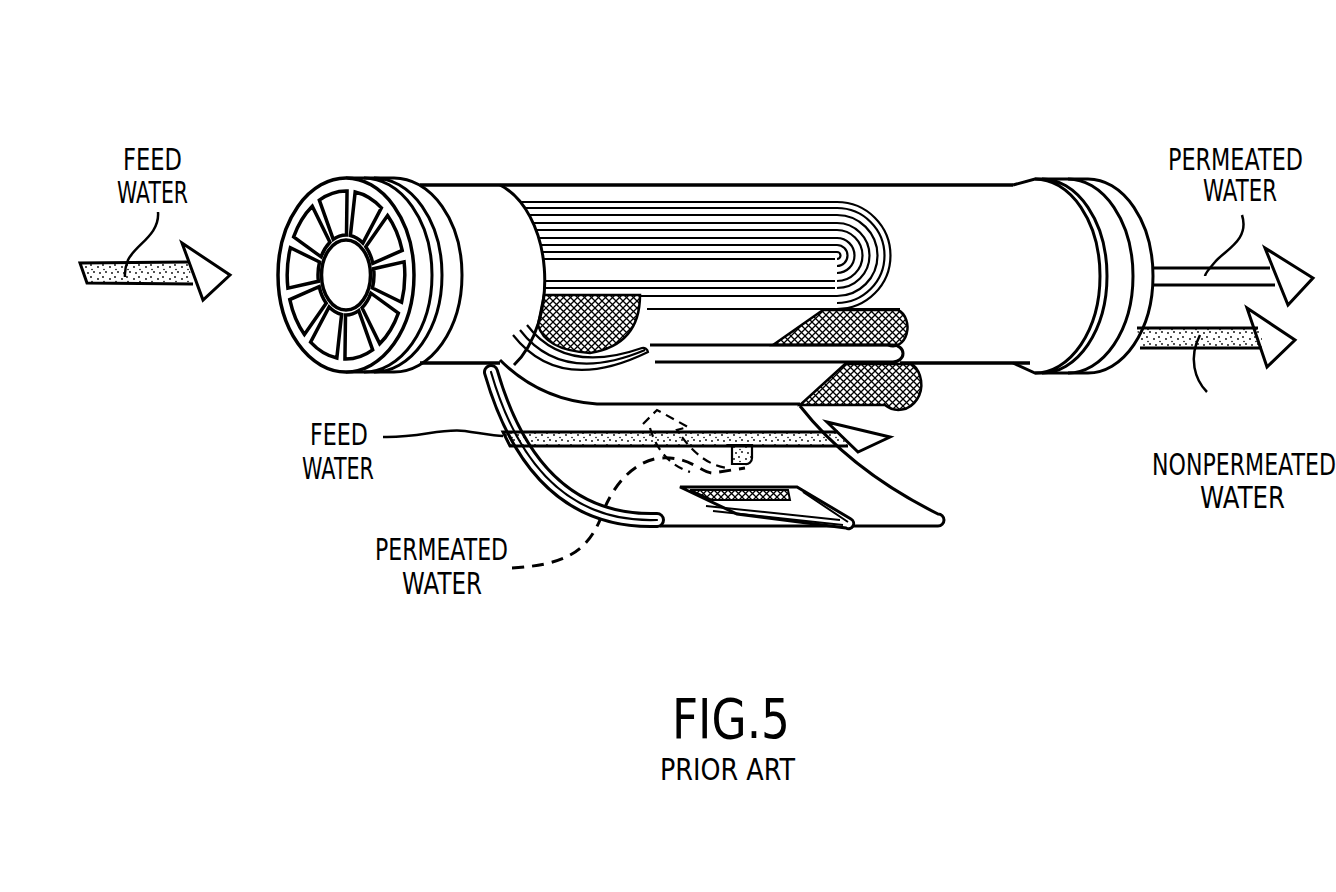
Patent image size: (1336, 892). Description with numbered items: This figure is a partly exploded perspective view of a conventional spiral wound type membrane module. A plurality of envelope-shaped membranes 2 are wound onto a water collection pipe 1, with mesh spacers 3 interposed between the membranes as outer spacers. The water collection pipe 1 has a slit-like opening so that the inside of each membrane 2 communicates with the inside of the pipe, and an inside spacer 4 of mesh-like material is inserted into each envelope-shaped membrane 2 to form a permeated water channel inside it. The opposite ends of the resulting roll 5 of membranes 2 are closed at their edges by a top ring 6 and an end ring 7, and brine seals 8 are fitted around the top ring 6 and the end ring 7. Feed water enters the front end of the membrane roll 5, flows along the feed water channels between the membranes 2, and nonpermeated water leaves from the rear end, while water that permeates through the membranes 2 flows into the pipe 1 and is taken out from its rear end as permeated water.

The water collection pipe 1 is at (665, 273).
The envelope-shaped membrane 2 is at (897, 517).
The mesh spacer 3 is at (893, 398).
The inside spacer 4 is at (772, 497).
The roll 5 is at (941, 163).
The top ring 6 is at (320, 188).
The end ring 7 is at (1093, 207).
The brine seal 8 is at (420, 188).